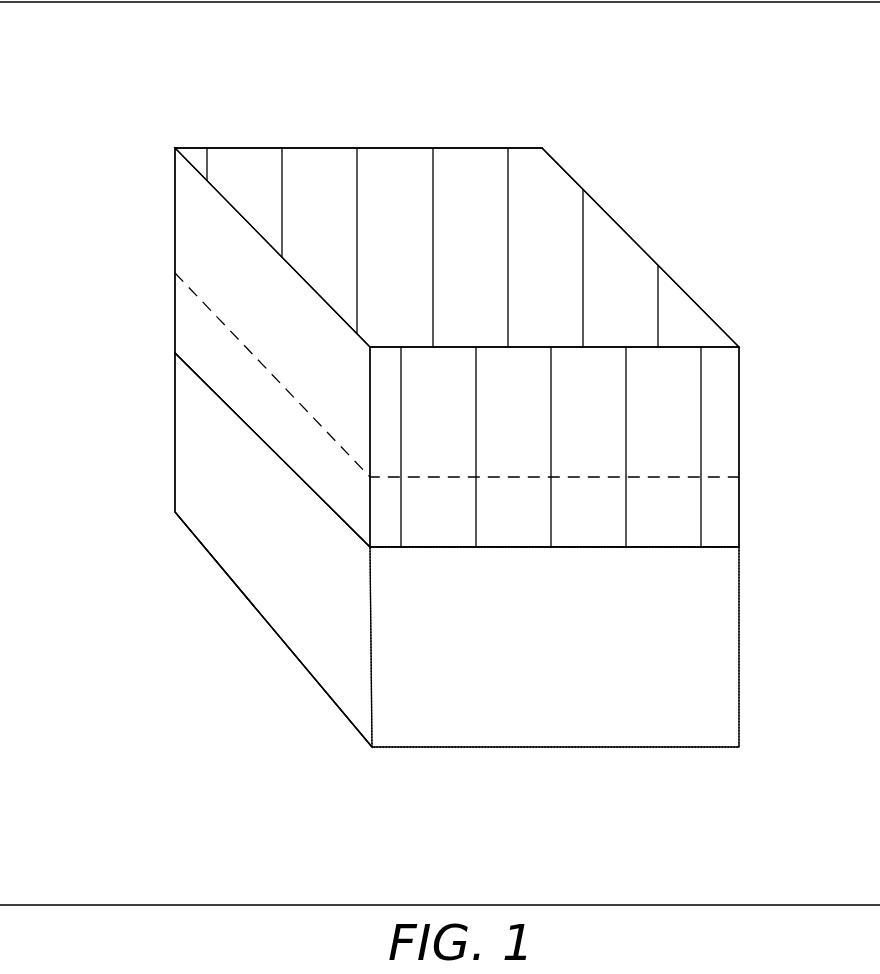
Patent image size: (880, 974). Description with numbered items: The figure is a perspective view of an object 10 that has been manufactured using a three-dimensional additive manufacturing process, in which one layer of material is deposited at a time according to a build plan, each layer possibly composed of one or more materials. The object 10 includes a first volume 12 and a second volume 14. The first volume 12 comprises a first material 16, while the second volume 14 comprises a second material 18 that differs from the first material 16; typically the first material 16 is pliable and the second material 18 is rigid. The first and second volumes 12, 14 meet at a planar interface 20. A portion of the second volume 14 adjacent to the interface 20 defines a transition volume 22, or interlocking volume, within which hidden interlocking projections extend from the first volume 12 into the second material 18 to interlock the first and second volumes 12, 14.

The object 10 is at (230, 44).
The first volume 12 is at (285, 645).
The second volume 14 is at (637, 243).
The first material 16 is at (478, 647).
The second material 18 is at (525, 423).
The planar interface 20 is at (742, 550).
The transition volume 22 is at (739, 515).